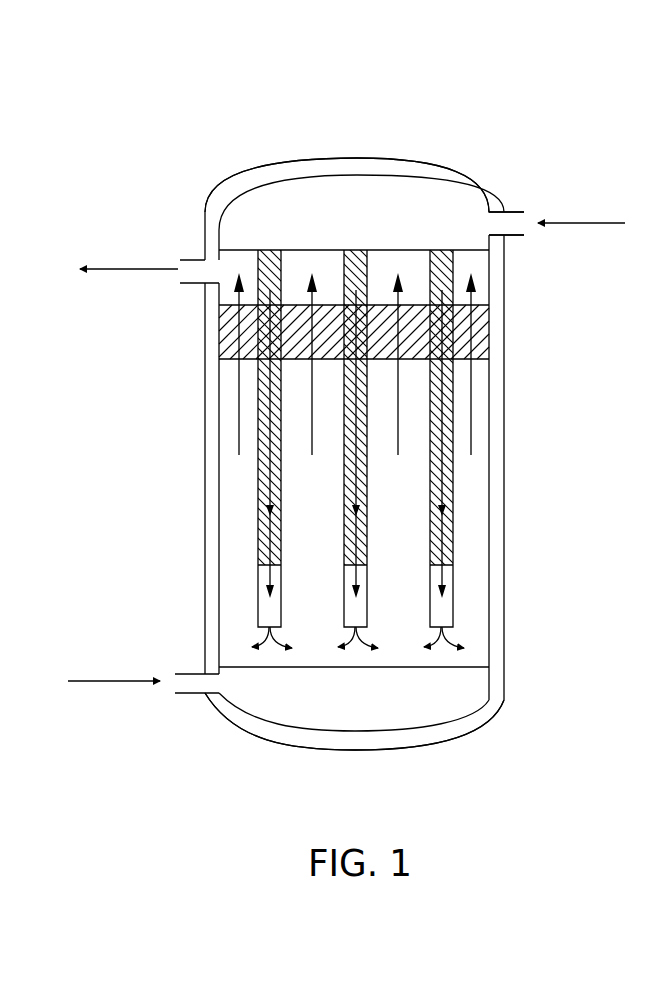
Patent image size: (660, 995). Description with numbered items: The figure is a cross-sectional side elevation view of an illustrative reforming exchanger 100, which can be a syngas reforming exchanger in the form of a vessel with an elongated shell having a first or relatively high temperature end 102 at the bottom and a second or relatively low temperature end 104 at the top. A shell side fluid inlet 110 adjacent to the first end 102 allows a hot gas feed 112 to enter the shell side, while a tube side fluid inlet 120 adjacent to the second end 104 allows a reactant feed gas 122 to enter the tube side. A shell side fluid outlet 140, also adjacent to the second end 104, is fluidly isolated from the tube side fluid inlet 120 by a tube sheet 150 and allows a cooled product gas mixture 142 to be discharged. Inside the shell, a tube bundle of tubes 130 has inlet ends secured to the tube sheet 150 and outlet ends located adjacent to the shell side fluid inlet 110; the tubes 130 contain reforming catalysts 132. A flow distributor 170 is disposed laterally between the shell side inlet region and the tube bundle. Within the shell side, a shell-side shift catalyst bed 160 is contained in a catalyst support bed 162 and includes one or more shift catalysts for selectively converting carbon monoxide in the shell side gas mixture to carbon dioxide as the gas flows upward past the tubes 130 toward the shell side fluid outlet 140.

The reforming exchanger 100 is at (208, 83).
The first end 102 is at (268, 738).
The second end 104 is at (355, 157).
The shell side fluid inlet 110 is at (183, 695).
The hot gas feed 112 is at (98, 680).
The tube side fluid inlet 120 is at (508, 212).
The reactant feed gas 122 is at (605, 222).
The tubes 130 is at (447, 610).
The reforming catalysts 132 is at (447, 549).
The shell side fluid outlet 140 is at (185, 259).
The cooled product gas mixture 142 is at (120, 274).
The tube sheet 150 is at (318, 250).
The shell-side shift catalyst bed 160 is at (480, 330).
The catalyst support bed 162 is at (478, 306).
The flow distributor 170 is at (458, 670).